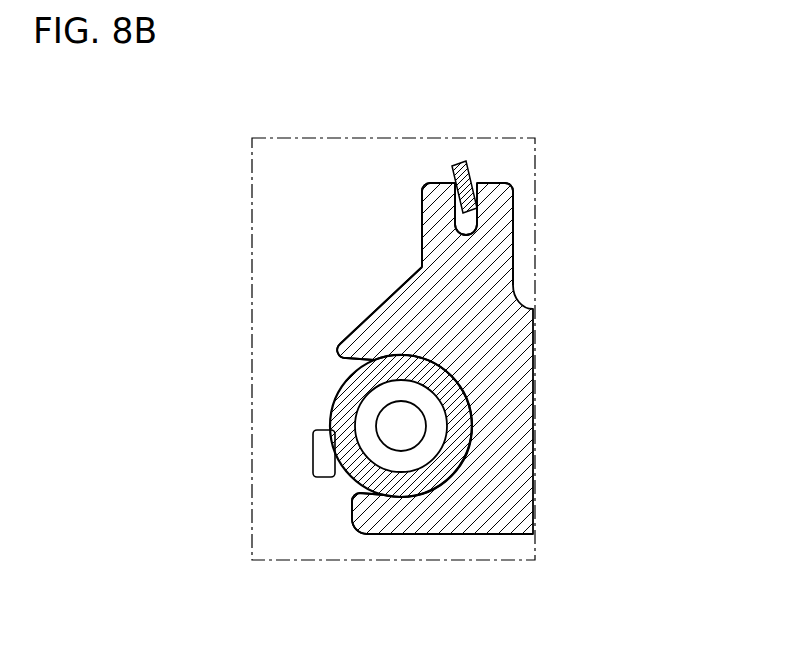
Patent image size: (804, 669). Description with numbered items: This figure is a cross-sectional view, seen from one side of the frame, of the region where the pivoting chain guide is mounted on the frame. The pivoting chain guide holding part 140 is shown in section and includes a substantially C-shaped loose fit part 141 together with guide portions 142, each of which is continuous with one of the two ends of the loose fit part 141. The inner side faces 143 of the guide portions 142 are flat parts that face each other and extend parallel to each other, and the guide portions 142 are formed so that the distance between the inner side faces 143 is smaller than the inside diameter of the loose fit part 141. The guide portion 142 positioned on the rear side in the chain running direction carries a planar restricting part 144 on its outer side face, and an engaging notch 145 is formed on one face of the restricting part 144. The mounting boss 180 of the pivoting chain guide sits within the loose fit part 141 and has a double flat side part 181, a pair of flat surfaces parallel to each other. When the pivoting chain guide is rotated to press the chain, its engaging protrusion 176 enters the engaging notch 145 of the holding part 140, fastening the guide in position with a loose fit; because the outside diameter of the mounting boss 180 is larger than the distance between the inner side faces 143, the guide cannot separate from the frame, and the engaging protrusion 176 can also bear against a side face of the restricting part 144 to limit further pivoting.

The pivoting chain guide holding part 140 is at (497, 534).
The loose fit part 141 is at (425, 490).
The guide portions 142 is at (360, 327).
The inner side faces 143 is at (368, 359).
The restricting part 144 is at (422, 204).
The engaging notch 145 is at (478, 222).
The engaging protrusion 176 is at (459, 162).
The mounting boss 180 is at (335, 410).
The double flat side part 181 is at (468, 403).